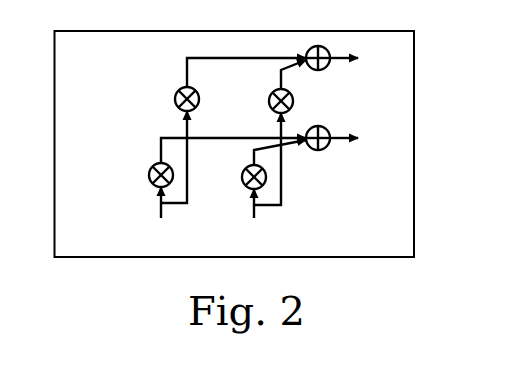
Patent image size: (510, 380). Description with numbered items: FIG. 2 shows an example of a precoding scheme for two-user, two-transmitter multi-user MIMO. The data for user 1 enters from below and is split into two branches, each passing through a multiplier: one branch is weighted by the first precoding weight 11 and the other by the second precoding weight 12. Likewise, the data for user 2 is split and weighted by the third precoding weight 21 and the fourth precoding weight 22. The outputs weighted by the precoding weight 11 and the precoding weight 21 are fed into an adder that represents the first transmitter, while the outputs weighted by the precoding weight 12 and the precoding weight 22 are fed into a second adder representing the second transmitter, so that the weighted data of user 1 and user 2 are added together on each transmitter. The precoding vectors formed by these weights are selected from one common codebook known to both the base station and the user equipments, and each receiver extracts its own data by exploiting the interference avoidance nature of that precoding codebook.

The precoding weight w11 11 is at (175, 99).
The precoding weight w12 12 is at (149, 175).
The precoding weight w21 21 is at (269, 101).
The precoding weight w22 22 is at (242, 177).
The data for user 1 (d1) 1 is at (170, 178).
The data for user 2 (d2) 2 is at (263, 179).